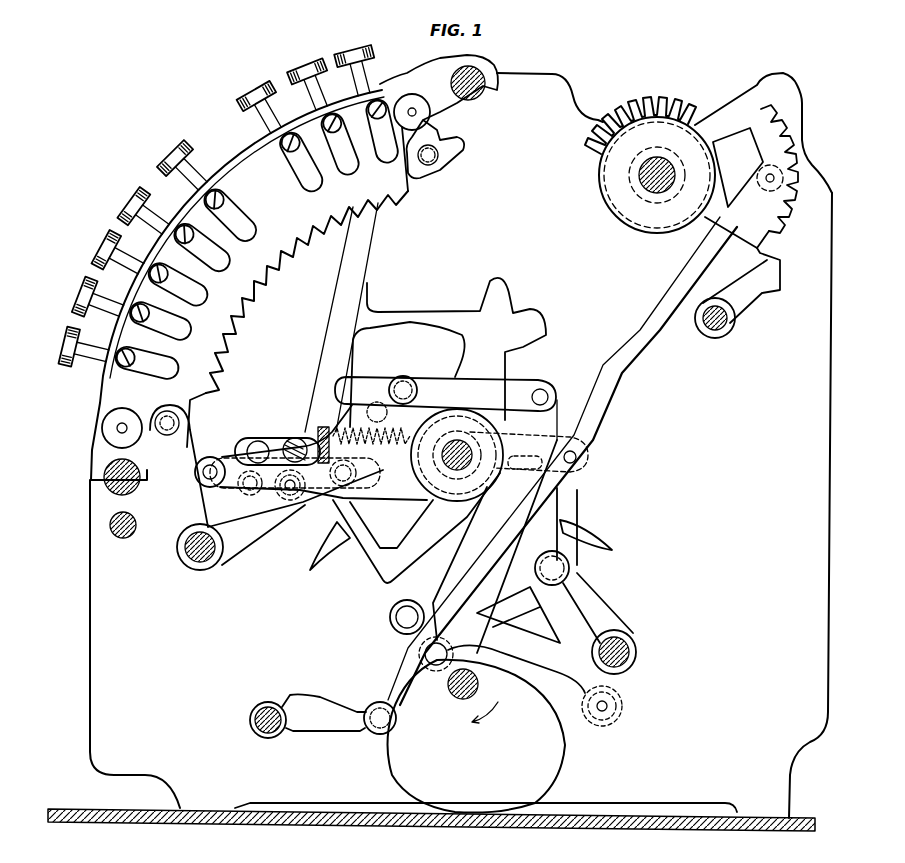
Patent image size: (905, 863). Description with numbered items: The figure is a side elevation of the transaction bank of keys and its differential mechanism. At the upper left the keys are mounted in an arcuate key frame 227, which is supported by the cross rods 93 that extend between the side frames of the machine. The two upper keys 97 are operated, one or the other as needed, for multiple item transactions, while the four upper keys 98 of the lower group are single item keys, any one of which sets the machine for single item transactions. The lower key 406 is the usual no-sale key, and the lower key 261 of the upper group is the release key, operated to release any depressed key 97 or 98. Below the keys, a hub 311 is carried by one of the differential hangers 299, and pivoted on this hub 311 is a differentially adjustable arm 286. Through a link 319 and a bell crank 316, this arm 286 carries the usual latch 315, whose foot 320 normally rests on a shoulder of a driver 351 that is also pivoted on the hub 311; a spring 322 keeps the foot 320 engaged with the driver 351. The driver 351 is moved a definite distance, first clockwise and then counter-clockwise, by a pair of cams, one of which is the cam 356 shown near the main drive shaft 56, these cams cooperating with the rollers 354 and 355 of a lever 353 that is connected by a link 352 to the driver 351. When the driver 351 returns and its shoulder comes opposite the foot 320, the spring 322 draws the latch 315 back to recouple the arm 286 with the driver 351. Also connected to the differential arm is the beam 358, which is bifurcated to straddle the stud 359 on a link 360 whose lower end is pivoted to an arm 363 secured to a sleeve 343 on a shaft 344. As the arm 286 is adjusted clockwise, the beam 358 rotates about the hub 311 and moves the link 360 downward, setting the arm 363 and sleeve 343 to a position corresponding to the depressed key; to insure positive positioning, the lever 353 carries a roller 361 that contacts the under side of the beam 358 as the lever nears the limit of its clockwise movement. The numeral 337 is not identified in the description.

The upper keys 97 is at (345, 46).
The release key 261 is at (252, 88).
The key frame 227 is at (243, 152).
The single item keys 98 is at (140, 195).
The No sale key 406 is at (65, 335).
The cross rods 93 is at (478, 94).
The differential hanger 299 is at (462, 316).
The link 352 is at (515, 377).
The link 360 is at (622, 376).
The hub 311 is at (459, 445).
The latch 315 is at (287, 440).
The foot 320 is at (323, 425).
The stud 359 is at (578, 456).
The lever 353 is at (560, 502).
The spring 322 is at (380, 470).
The beam 358 is at (422, 500).
The bell crank 316 is at (253, 500).
The differentially adjustable arm 286 is at (292, 498).
The link 319 is at (268, 535).
The driver 351 is at (367, 558).
The roller 361 is at (390, 617).
The roller 354 is at (450, 648).
The sleeve 343 is at (272, 706).
The arm 363 is at (323, 710).
The shaft 344 is at (252, 714).
The main drive shaft 56 is at (460, 698).
The roller 355 is at (622, 706).
The cam 356 is at (543, 740).
The cam disk 337 is at (562, 755).